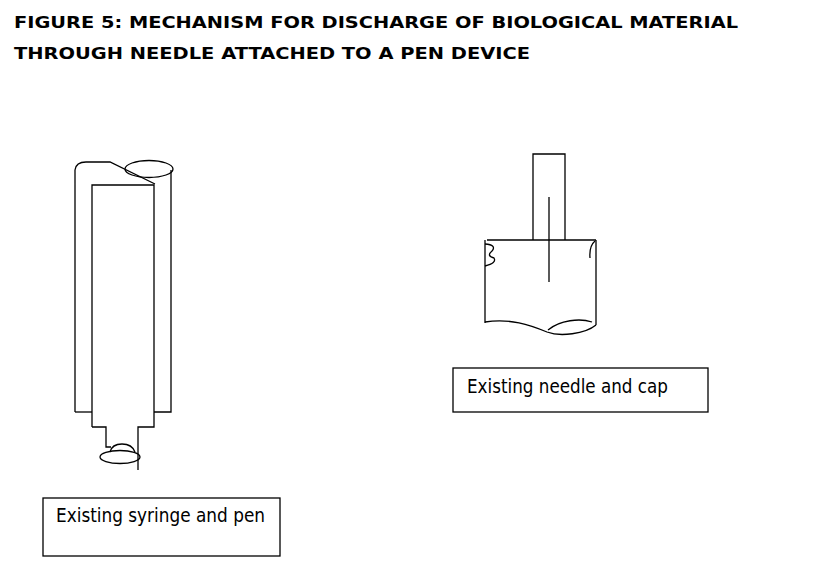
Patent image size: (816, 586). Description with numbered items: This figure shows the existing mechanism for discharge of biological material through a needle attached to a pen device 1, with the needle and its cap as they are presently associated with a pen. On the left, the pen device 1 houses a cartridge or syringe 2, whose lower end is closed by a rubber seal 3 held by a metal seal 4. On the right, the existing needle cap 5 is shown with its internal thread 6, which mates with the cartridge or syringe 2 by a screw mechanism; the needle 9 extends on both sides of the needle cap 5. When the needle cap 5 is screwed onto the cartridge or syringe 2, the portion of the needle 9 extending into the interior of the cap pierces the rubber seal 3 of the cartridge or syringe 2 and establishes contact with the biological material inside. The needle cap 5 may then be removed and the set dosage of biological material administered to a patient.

The pen device 1 is at (171, 212).
The cartridge or syringe 2 is at (154, 298).
The rubber seal 3 is at (138, 437).
The Metal seal 4 is at (138, 470).
The needle cap 5 is at (629, 190).
The internal thread 6 is at (598, 252).
The needle 9 is at (549, 225).